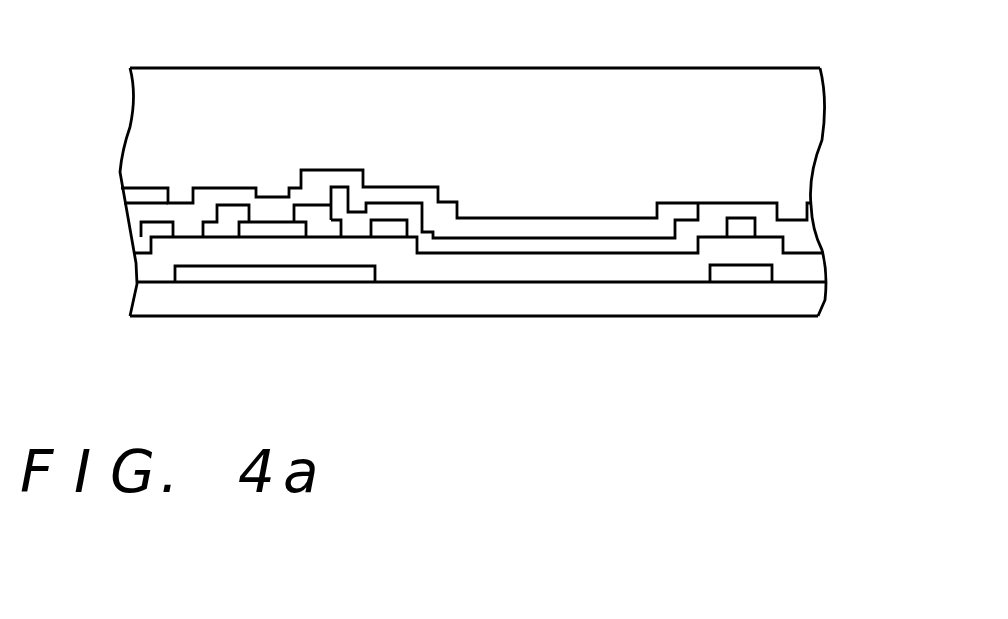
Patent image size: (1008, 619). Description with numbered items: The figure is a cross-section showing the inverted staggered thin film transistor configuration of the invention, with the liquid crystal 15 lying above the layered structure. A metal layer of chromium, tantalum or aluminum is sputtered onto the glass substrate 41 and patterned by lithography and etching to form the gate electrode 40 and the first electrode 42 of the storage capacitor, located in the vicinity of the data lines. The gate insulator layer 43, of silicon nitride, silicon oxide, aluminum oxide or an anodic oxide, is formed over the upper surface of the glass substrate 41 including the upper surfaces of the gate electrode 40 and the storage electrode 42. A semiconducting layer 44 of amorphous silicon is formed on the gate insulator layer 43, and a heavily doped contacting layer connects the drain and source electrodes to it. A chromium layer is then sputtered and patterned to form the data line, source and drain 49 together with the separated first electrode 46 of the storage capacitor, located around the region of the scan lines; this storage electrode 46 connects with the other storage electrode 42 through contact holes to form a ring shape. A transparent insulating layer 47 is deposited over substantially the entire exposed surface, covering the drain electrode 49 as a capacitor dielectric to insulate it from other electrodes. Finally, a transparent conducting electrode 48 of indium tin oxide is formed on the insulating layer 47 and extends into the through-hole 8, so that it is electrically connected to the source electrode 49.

The through-hole 8 is at (296, 150).
The liquid crystal 15 is at (519, 95).
The gate electrode 40 is at (272, 273).
The glass substrate 41 is at (800, 303).
The first electrode of the storage capacitor 42 is at (760, 275).
The gate insulator layer 43 is at (208, 256).
The semiconducting layer 44 is at (259, 226).
The separated first electrode of the storage capacitor 46 is at (403, 250).
The transparent insulating layer 47 is at (400, 209).
The transparent conducting electrode 48 is at (594, 220).
The data line, source and drain electrodes 49 is at (321, 213).